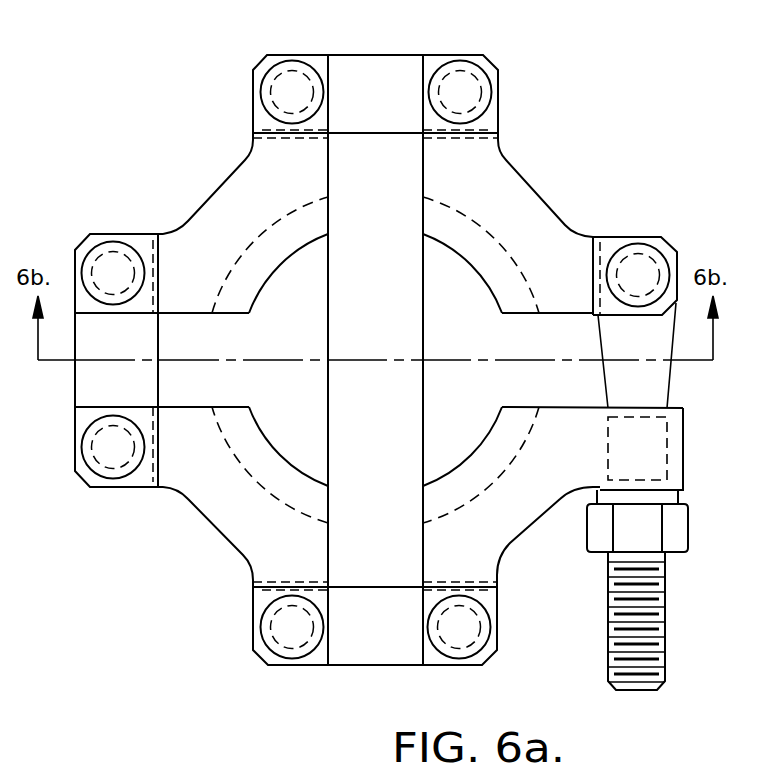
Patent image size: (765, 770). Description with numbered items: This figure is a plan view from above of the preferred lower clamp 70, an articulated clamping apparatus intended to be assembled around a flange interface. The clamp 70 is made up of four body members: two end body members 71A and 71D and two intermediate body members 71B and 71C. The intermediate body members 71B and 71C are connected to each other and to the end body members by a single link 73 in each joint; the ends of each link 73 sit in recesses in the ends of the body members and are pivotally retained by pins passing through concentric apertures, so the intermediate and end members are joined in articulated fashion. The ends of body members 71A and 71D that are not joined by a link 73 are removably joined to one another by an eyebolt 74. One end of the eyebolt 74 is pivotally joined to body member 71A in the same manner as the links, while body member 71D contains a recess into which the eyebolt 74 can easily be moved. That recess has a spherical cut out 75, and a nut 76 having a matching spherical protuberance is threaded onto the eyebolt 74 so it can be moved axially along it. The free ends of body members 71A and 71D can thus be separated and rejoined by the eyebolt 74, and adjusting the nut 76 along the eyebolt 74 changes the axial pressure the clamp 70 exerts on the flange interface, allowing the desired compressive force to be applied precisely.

The lower clamp 70 is at (130, 543).
The end body member 71A is at (523, 187).
The intermediate body member 71B is at (204, 209).
The intermediate body member 71C is at (225, 537).
The end body member 71D is at (550, 518).
The link 73 is at (397, 55).
The eyebolt 74 is at (670, 378).
The spherical cut out 75 is at (669, 480).
The nut 76 is at (684, 552).